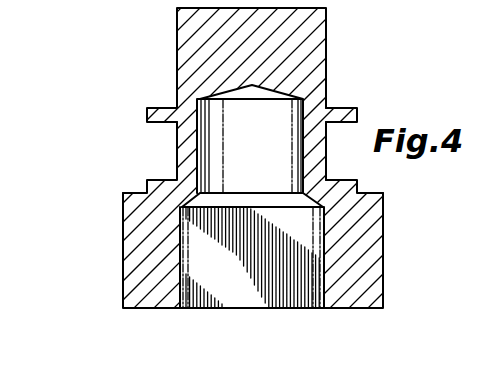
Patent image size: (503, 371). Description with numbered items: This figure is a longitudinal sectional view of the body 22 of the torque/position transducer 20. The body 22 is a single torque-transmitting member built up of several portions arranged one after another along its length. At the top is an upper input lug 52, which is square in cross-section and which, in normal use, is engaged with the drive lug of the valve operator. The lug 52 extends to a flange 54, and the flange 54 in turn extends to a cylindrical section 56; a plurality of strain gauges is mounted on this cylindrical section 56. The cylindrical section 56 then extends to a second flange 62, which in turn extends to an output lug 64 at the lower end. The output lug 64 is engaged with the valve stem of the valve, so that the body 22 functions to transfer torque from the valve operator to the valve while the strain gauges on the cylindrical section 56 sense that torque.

The torque/position transducer 20 is at (172, 47).
The body 22 is at (334, 25).
The upper input lug 52 is at (327, 80).
The flange 54 is at (357, 108).
The cylindrical section 56 is at (175, 139).
The second flange 62 is at (357, 181).
The output lug 64 is at (385, 247).